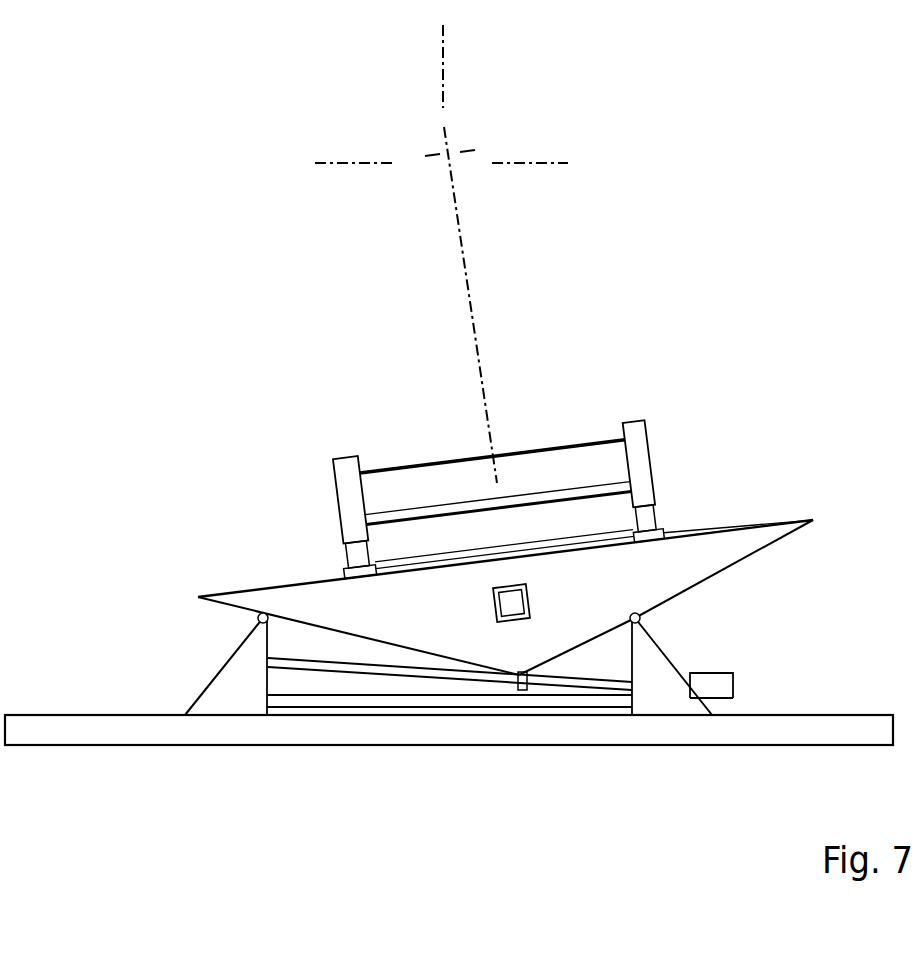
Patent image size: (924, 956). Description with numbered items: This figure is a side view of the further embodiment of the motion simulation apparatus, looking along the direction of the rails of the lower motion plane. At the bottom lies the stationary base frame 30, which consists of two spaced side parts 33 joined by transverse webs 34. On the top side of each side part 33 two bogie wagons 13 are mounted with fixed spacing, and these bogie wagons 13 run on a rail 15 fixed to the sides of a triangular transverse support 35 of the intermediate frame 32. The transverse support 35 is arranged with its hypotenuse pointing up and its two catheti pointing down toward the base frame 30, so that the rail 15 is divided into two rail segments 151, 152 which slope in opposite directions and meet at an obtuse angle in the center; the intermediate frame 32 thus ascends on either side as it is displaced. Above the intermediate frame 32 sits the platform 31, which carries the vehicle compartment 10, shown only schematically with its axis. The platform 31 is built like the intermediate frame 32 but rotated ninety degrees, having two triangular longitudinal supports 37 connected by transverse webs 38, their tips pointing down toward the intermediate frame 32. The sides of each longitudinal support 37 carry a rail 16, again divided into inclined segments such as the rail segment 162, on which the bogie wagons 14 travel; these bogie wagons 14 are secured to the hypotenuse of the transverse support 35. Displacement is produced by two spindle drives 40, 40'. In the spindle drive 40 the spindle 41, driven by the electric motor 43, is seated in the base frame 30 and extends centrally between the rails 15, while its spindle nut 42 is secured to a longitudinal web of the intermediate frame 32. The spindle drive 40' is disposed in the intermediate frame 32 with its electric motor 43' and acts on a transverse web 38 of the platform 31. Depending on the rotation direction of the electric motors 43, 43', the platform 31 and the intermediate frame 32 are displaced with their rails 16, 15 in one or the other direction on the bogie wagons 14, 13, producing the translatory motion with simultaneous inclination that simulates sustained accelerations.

The vehicle compartment 10 is at (473, 303).
The bogie wagon 13 is at (258, 617).
The bogie wagon 14 is at (345, 488).
The rail 15 is at (492, 629).
The rail segment 151 is at (319, 626).
The rail segment 152 is at (717, 570).
The rail 16 is at (577, 531).
The rail segment 162 is at (500, 536).
The base frame 30 is at (213, 715).
The platform 31 is at (530, 460).
The intermediate frame 32 is at (764, 525).
The side part 33 is at (243, 702).
The transverse web 34 is at (412, 702).
The transverse support 35 is at (732, 545).
The longitudinal support 37 is at (494, 481).
The transverse web 38 is at (495, 482).
The spindle drive 40 is at (761, 750).
The spindle drive 40' is at (538, 709).
The spindle 41 is at (322, 670).
The spindle nut 42 is at (521, 690).
The electric motor 43 is at (722, 760).
The electric motor 43' is at (555, 711).